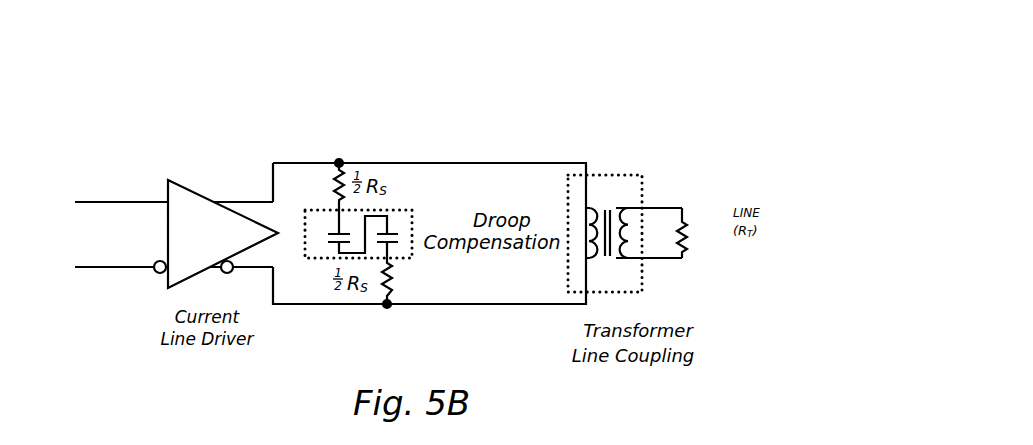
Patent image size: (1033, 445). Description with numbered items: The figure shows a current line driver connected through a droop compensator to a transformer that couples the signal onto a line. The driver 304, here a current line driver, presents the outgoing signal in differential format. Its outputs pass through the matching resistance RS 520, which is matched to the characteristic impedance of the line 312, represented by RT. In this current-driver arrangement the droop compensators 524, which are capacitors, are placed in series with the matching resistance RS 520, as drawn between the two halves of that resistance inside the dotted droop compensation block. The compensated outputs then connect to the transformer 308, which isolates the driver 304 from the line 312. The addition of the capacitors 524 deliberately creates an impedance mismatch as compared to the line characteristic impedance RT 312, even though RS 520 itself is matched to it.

The driver 304 is at (216, 234).
The matching resistance RS 520 is at (338, 176).
The droop compensators 524 is at (390, 232).
The transformer 308 is at (622, 175).
The line 312 is at (685, 222).